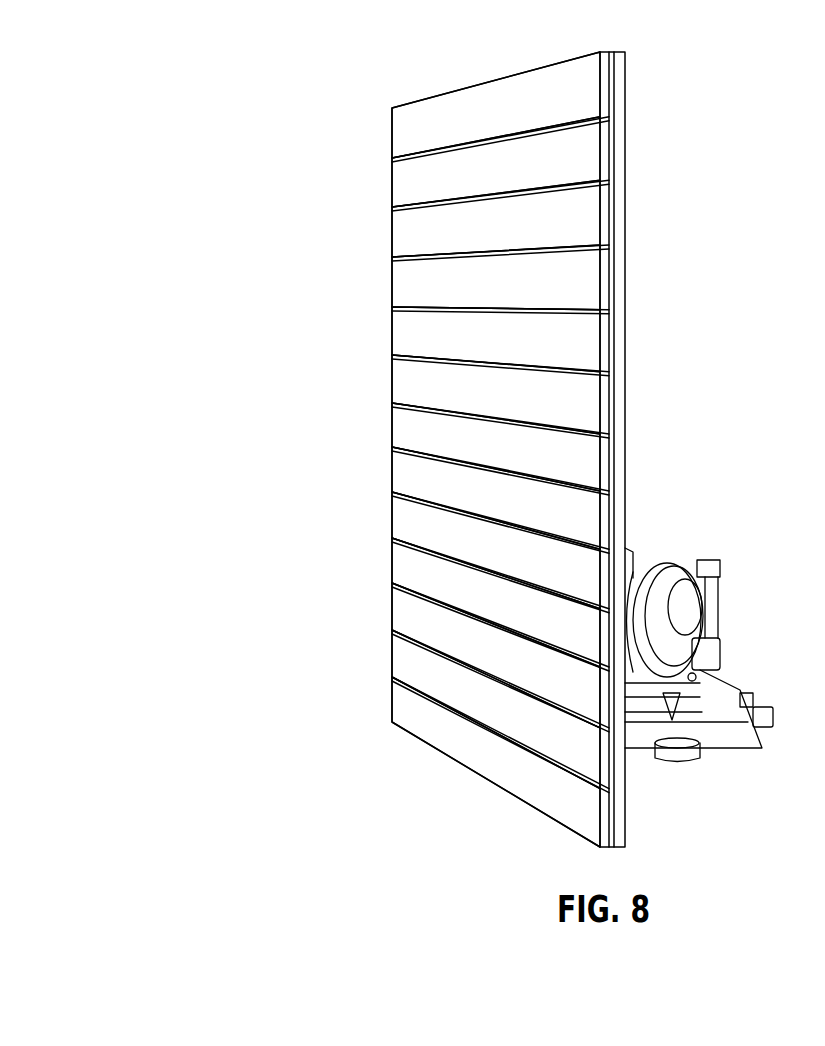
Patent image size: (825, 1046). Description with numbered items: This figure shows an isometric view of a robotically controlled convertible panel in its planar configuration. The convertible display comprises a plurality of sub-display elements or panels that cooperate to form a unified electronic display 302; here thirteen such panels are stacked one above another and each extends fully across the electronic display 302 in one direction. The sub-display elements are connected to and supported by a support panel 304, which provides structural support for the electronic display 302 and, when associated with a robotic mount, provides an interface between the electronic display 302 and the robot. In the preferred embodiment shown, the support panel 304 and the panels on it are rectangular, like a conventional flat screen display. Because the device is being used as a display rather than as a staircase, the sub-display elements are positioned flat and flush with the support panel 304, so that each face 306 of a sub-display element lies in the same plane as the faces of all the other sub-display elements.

The electronic display 302 is at (386, 449).
The support panel 304 is at (636, 382).
The face 306 is at (499, 97).